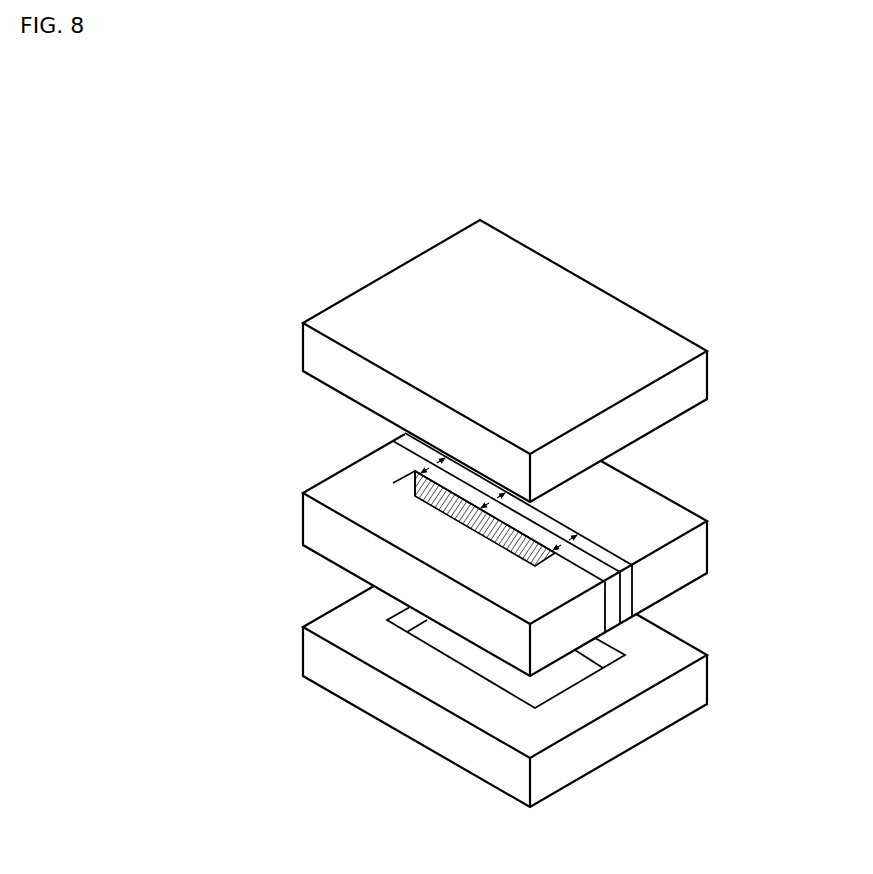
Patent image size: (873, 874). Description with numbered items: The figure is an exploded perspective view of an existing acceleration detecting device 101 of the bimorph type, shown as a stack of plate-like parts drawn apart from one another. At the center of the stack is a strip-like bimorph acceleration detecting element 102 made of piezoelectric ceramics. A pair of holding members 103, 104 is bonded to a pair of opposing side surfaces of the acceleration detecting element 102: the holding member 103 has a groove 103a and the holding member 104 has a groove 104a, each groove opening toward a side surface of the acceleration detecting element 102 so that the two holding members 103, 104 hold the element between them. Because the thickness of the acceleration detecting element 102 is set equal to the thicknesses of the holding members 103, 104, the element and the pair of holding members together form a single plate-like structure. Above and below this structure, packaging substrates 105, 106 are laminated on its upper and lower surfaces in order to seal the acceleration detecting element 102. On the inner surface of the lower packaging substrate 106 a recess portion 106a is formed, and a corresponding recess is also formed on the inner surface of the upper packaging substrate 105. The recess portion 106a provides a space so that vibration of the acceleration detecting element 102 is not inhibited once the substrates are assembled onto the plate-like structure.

The acceleration detecting device 101 is at (365, 199).
The acceleration detecting element 102 is at (636, 590).
The holding member 103 is at (683, 507).
The groove 103a is at (583, 520).
The holding member 104 is at (303, 527).
The groove 104a is at (407, 495).
The packaging substrate 105 is at (568, 269).
The packaging substrate 106 is at (642, 743).
The recess portion 106a is at (510, 677).